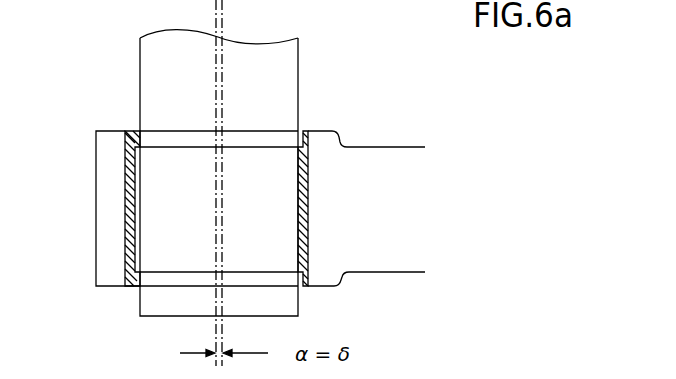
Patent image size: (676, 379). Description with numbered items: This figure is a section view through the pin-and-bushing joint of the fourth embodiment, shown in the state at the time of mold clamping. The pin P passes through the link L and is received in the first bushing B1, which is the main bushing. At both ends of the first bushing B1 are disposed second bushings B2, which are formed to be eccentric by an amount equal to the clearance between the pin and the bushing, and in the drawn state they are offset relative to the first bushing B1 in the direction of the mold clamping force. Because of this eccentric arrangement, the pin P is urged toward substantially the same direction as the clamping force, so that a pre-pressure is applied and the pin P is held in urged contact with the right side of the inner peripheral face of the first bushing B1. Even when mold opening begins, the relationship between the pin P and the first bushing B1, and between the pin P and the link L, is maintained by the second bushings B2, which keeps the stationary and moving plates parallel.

The pin P is at (147, 59).
The first bushing B1 is at (125, 252).
The second bushings B2 is at (127, 131).
The link L is at (363, 160).